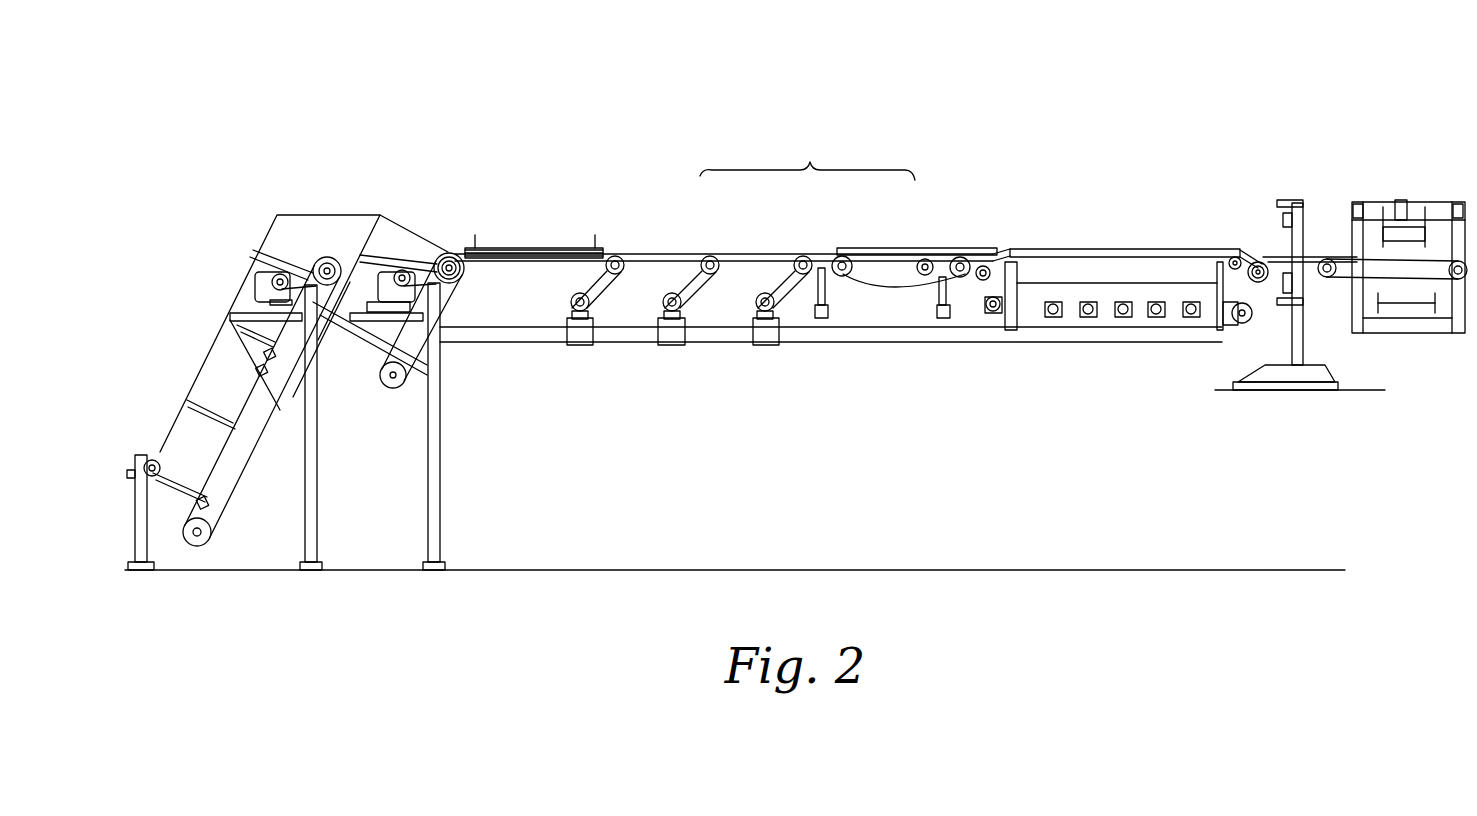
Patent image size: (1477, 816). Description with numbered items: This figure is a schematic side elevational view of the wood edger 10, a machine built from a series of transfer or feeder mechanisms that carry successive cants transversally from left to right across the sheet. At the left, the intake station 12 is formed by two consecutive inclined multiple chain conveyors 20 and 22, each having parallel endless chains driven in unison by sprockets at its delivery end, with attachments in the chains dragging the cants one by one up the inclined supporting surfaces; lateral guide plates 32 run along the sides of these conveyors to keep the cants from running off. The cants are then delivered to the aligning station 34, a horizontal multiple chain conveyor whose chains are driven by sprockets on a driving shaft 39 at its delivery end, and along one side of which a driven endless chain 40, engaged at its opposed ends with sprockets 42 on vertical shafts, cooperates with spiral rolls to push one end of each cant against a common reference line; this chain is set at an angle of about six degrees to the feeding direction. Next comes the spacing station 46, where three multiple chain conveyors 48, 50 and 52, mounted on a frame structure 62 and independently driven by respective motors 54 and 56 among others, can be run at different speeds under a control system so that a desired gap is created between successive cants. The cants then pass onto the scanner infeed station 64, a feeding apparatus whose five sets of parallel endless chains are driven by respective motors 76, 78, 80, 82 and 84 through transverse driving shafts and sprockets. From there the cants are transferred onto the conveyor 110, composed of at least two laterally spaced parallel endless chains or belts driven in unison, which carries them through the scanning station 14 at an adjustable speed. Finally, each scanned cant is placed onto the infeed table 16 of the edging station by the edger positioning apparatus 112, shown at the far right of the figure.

The wood edger 10 is at (796, 320).
The intake station 12 is at (386, 213).
The scanning station 14 is at (1288, 197).
The infeed table 16 is at (1443, 198).
The multiple chain conveyor 20 is at (248, 384).
The multiple chain conveyor 22 is at (398, 340).
The lateral guide plates 32 is at (410, 242).
The aligning station 34 is at (552, 242).
The driving shaft 39 is at (625, 262).
The driven endless chain 40 is at (520, 246).
The sprockets 42 is at (475, 247).
The spacing station 46 is at (810, 162).
The multiple chain conveyor 48 is at (683, 251).
The multiple chain conveyor 50 is at (760, 251).
The multiple chain conveyor 52 is at (868, 245).
The motor 54 is at (680, 306).
The motor 56 is at (773, 305).
The frame structure 62 is at (625, 333).
The scanner infeed station 64 is at (1123, 254).
The motor 76 is at (1052, 313).
The motor 78 is at (1090, 315).
The motor 80 is at (1125, 315).
The motor 82 is at (1158, 317).
The motor 84 is at (1193, 317).
The conveyor 110 is at (1259, 252).
The edger positioning apparatus 112 is at (1372, 250).